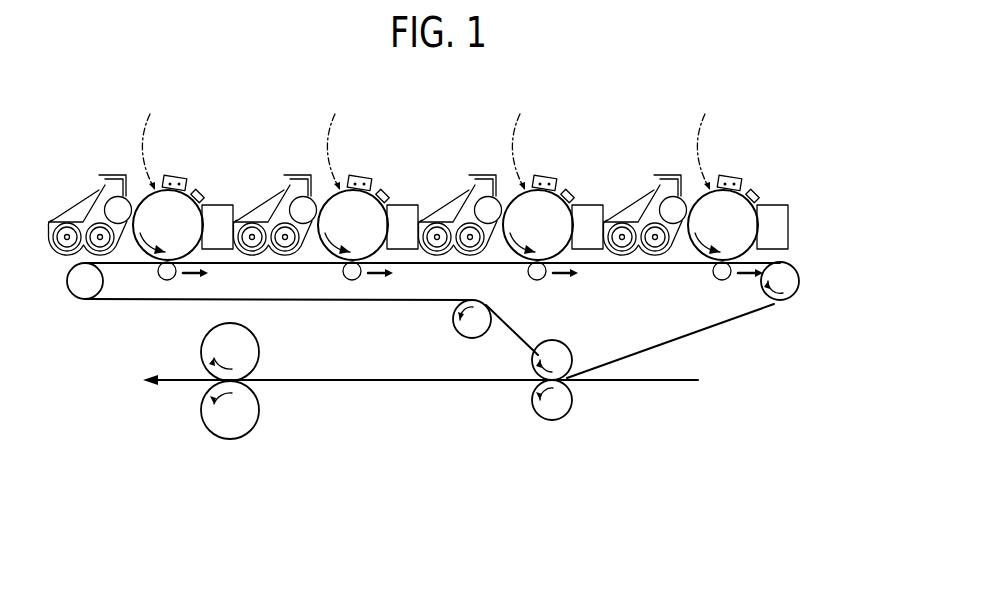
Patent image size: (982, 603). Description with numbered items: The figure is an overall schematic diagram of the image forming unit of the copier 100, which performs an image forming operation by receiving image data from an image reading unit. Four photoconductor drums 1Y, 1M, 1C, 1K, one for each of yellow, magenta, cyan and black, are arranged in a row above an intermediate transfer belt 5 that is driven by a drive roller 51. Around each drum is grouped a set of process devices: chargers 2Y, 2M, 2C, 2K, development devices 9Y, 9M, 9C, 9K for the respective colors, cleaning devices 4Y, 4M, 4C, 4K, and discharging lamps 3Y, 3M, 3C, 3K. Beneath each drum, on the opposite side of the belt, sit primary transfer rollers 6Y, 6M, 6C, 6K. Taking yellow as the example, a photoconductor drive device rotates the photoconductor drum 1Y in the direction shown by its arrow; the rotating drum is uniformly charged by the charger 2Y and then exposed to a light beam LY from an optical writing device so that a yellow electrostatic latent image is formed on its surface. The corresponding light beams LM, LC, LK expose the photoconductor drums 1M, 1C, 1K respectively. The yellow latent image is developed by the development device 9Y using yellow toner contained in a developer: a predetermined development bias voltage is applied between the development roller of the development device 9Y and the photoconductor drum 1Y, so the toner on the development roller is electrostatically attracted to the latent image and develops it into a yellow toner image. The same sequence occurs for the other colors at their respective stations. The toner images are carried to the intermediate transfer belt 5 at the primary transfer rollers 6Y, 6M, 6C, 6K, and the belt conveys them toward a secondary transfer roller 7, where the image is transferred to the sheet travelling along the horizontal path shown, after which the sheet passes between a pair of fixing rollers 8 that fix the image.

The copier 100 is at (636, 83).
The photoconductor drum 1Y is at (180, 234).
The photoconductor drum 1M is at (365, 234).
The photoconductor drum 1C is at (550, 234).
The photoconductor drum 1K is at (735, 234).
The charger 2Y is at (177, 177).
The charger 2M is at (362, 177).
The charger 2C is at (547, 177).
The charger 2K is at (732, 177).
The discharging lamp 3Y is at (201, 191).
The discharging lamp 3M is at (386, 191).
The discharging lamp 3C is at (571, 191).
The discharging lamp 3K is at (756, 191).
The cleaning device 4Y is at (228, 205).
The cleaning device 4M is at (413, 205).
The cleaning device 4C is at (598, 205).
The cleaning device 4K is at (783, 205).
The primary transfer roller 6Y is at (157, 271).
The primary transfer roller 6M is at (342, 271).
The primary transfer roller 6C is at (527, 271).
The primary transfer roller 6K is at (712, 271).
The development device 9Y is at (105, 176).
The development device 9M is at (290, 176).
The development device 9C is at (475, 176).
The development device 9K is at (660, 176).
The light beam LY is at (150, 114).
The light beam LM is at (335, 114).
The light beam LC is at (520, 114).
The light beam LK is at (705, 114).
The intermediate transfer belt 5 is at (718, 328).
The drive roller 51 is at (788, 264).
The secondary transfer roller 7 is at (574, 401).
The pair of fixing rollers 8 is at (267, 404).